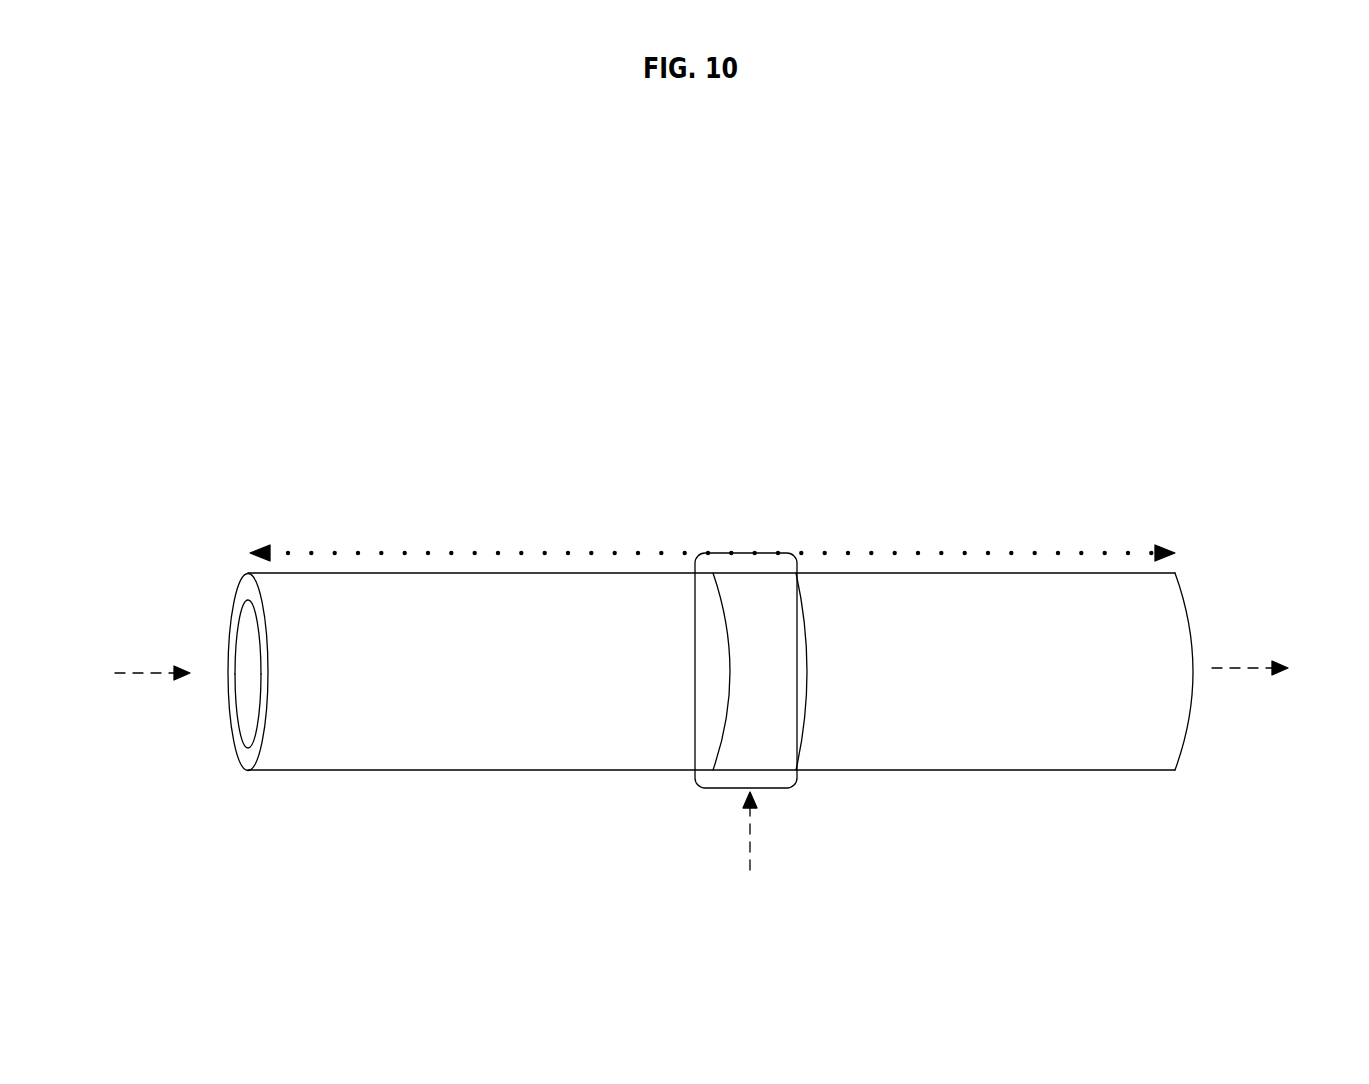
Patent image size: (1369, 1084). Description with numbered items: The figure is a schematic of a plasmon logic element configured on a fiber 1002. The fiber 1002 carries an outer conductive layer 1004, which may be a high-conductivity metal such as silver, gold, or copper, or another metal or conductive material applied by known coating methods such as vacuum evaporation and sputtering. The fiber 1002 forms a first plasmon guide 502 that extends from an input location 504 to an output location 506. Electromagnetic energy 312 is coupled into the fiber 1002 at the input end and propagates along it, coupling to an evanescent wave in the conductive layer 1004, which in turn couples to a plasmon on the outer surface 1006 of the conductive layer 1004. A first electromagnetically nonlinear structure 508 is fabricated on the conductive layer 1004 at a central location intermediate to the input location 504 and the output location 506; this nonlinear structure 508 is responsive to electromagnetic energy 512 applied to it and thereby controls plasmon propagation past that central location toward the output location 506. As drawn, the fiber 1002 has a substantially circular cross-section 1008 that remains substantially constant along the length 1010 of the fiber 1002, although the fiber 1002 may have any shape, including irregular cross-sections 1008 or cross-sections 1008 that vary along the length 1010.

The fiber 1002 is at (819, 373).
The first plasmon guide 502 is at (604, 573).
The first electromagnetically nonlinear structure 508 is at (748, 573).
The length of the fiber 1010 is at (712, 533).
The cross-section of the fiber 1008 is at (235, 625).
The electromagnetic energy 312 is at (125, 674).
The input location 504 is at (248, 673).
The outer conductive layer 1004 is at (247, 760).
The outer surface of the conductive layer 1006 is at (268, 773).
The electromagnetic energy 512 is at (751, 848).
The output location 506 is at (1193, 692).